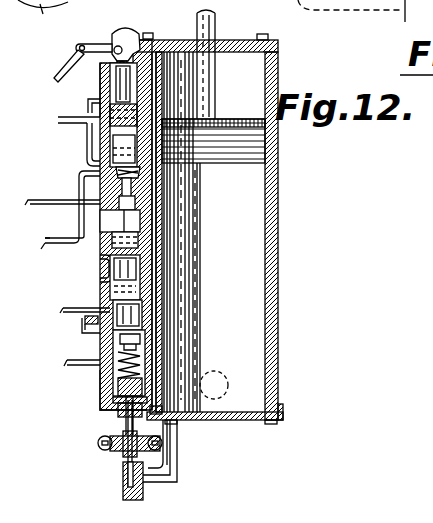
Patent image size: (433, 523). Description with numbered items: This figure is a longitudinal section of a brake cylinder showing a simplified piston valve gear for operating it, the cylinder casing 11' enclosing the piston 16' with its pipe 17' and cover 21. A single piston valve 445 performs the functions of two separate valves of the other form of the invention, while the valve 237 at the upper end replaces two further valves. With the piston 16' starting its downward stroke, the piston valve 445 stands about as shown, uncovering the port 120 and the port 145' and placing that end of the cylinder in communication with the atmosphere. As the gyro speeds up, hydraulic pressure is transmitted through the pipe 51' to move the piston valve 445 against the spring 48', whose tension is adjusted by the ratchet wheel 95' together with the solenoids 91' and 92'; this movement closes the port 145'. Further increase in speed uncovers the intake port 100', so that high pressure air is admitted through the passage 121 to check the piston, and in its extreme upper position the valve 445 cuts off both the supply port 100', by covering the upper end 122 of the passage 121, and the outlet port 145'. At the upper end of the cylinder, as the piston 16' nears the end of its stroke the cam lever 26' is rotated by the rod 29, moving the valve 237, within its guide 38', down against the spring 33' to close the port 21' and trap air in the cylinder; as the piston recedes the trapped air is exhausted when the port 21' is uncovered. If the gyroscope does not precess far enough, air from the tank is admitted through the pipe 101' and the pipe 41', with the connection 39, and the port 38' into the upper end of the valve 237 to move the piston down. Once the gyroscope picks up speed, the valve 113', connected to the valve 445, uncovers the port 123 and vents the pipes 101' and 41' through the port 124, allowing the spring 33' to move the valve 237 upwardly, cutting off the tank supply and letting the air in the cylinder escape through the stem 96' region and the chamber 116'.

The casing 11' is at (230, 238).
The piston 16' is at (213, 127).
The inlet pipe 17' is at (226, 63).
The cover plate 21 is at (205, 35).
The port 21' is at (61, 125).
The cam lever 26' is at (132, 37).
The rod 29 is at (70, 62).
The spring 33' is at (166, 178).
The port 38' is at (109, 115).
The pipe 39 is at (79, 173).
The pipe 41' is at (76, 144).
The spring 48' is at (108, 390).
The pipe 51' is at (69, 376).
The solenoid 91' is at (115, 446).
The solenoid 92' is at (174, 451).
The ratchet wheel 95' is at (119, 477).
The valve stem 96' is at (117, 441).
The intake port 100' is at (37, 254).
The pipe 101' is at (59, 193).
The valve 113' is at (177, 190).
The spring chamber 116' is at (106, 363).
The port 120 is at (160, 289).
The passage 121 is at (100, 265).
The upper end of passage 122 is at (160, 250).
The port 123 is at (160, 204).
The port 124 is at (100, 220).
The port 145' is at (76, 324).
The valve 237 is at (88, 106).
The piston valve 445 is at (102, 298).